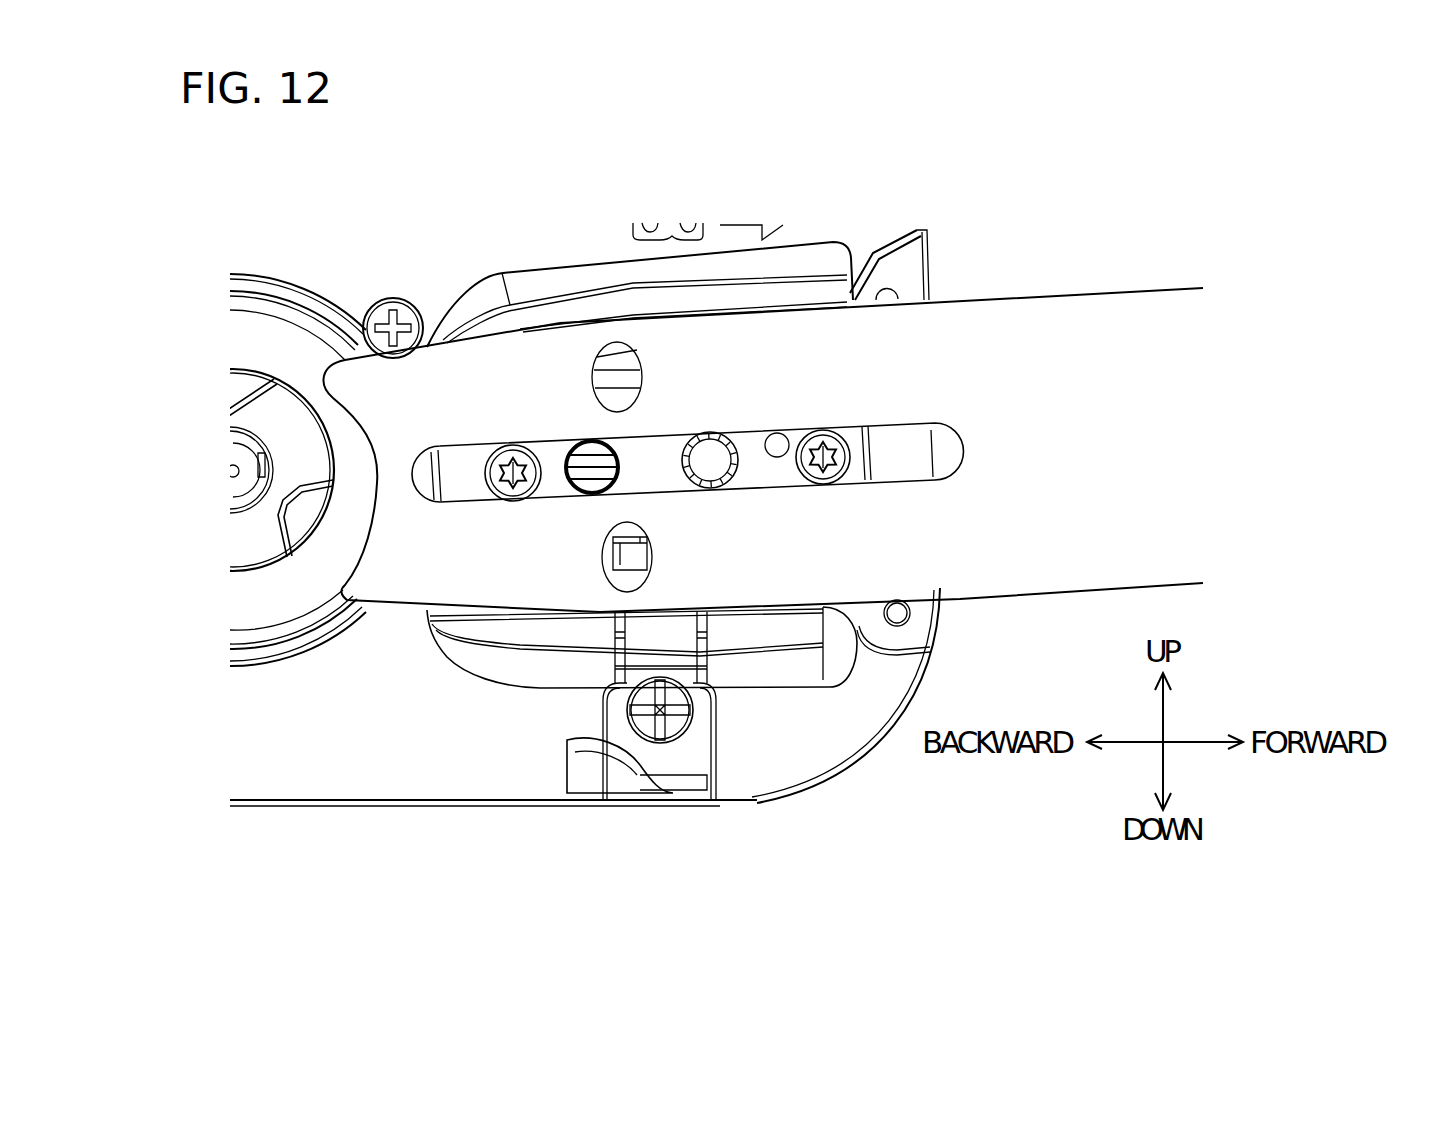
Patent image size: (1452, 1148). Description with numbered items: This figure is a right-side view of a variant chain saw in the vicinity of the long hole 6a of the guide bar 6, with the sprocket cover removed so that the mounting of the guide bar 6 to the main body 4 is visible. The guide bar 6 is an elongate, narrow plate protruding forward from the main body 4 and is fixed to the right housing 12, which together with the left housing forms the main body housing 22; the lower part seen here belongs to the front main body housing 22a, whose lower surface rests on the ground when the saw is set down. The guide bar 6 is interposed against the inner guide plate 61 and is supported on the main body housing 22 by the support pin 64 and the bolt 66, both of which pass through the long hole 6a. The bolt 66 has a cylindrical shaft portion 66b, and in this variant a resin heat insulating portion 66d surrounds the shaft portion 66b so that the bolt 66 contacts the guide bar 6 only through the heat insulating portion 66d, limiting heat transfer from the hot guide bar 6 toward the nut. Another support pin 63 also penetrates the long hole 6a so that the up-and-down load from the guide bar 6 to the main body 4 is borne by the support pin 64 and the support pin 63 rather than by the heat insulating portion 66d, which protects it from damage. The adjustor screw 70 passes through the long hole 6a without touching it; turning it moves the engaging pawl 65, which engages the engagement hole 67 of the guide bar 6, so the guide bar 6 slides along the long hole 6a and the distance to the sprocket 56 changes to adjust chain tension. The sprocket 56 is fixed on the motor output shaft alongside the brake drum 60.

The main body 4 is at (678, 857).
The guide bar 6 is at (1047, 310).
The long hole 6a is at (760, 438).
The right housing 12 is at (833, 733).
The main body housing 22 is at (433, 783).
The front main body housing 22a is at (357, 783).
The sprocket 56 is at (287, 415).
The brake drum 60 is at (283, 607).
The inner guide plate 61 is at (827, 253).
The support pin 63 is at (823, 485).
The support pin 64 is at (500, 452).
The engaging pawl 65 is at (603, 560).
The bolt 66 is at (731, 440).
The shaft portion 66b is at (705, 438).
The heat insulating portion 66d is at (713, 420).
The engagement hole 67 is at (630, 560).
The adjustor screw 70 is at (587, 460).